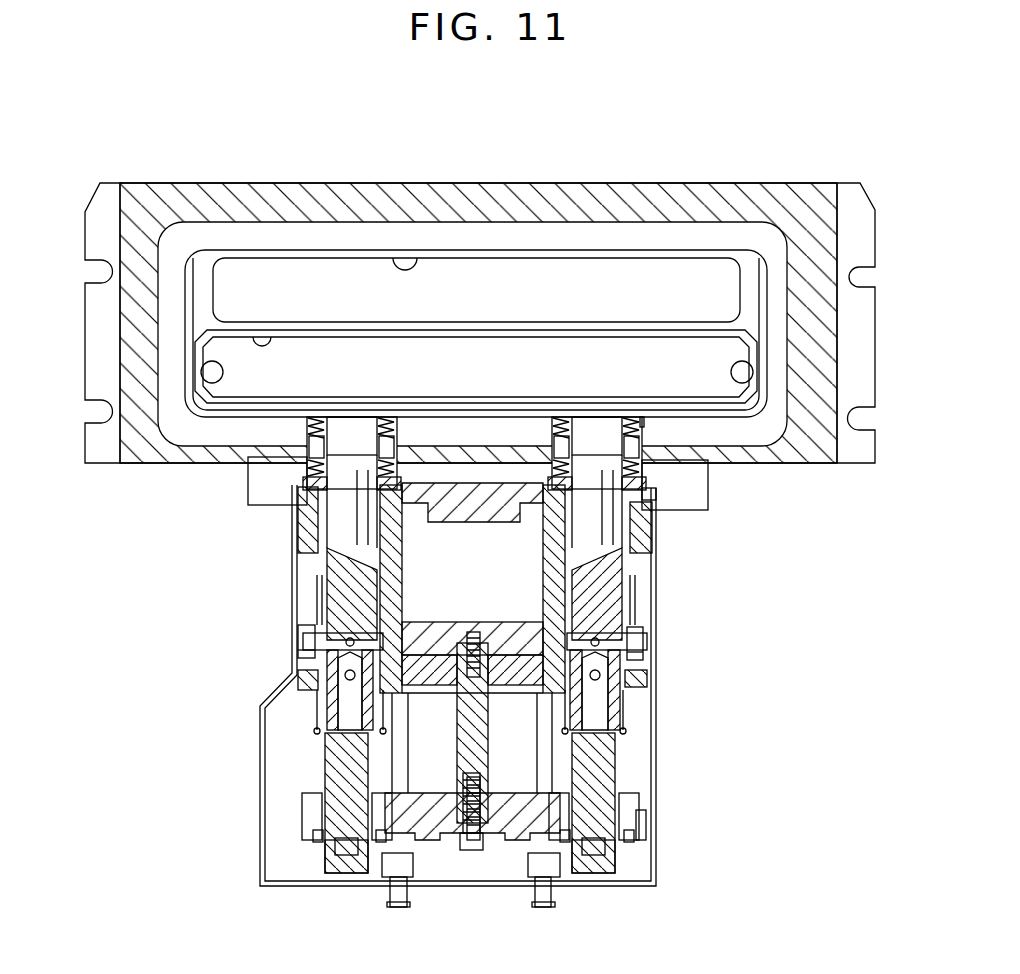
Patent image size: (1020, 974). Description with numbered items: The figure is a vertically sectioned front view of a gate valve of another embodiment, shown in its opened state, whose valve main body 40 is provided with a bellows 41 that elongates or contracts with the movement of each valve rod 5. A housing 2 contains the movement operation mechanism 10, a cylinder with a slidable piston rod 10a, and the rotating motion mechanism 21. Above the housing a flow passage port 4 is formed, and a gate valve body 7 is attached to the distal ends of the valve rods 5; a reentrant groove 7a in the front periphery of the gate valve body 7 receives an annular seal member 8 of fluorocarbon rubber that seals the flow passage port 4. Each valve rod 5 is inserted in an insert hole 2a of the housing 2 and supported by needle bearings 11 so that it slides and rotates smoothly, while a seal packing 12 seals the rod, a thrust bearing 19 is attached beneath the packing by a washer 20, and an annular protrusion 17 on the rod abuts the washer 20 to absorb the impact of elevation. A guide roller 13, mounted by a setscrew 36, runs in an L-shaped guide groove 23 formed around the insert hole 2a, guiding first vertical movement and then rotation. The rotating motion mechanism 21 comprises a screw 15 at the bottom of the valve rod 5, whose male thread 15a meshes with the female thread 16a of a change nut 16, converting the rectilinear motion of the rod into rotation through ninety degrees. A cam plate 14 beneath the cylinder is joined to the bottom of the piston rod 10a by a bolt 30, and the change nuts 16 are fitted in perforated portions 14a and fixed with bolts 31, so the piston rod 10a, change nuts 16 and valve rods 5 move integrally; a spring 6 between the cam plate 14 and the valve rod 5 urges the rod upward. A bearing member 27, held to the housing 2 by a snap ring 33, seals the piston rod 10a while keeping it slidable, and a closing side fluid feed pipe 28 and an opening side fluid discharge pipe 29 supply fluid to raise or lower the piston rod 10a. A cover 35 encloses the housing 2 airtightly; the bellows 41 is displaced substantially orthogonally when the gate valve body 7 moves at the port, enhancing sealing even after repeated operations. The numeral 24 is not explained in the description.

The housing 2 is at (643, 548).
The insert hole 2a is at (377, 538).
The flow passage port 4 is at (405, 258).
The valve rod 5 is at (328, 525).
The spring 6 is at (625, 760).
The gate valve body 7 is at (203, 393).
The reentrant groove 7a is at (267, 337).
The seal member 8 is at (638, 337).
The movement operation mechanism 10 is at (600, 695).
The piston rod 10a is at (460, 758).
The needle bearing 11 is at (317, 600).
The seal packing 12 is at (303, 475).
The guide roller 13 is at (307, 640).
The cam plate 14 is at (507, 845).
The perforated portion 14a is at (620, 838).
The screw 15 is at (330, 760).
The male thread 15a is at (625, 772).
The change nut 16 is at (570, 887).
The female thread 16a is at (322, 840).
The annular protrusion 17 is at (630, 577).
The thrust bearing 19 is at (708, 496).
The washer 20 is at (650, 496).
The rotating motion mechanism 21 is at (305, 740).
The L-shaped guide groove 23 is at (303, 567).
The nut 24 is at (330, 875).
The bearing member 27 is at (430, 678).
The closing side fluid feed pipe 28 is at (395, 908).
The opening side fluid discharge pipe 29 is at (540, 908).
The bolt 30 is at (470, 850).
The bolt 31 is at (636, 842).
The snap ring 33 is at (533, 685).
The cover 35 is at (277, 887).
The setscrew 36 is at (647, 645).
The valve main body 40 is at (660, 827).
The bellows 41 is at (643, 423).